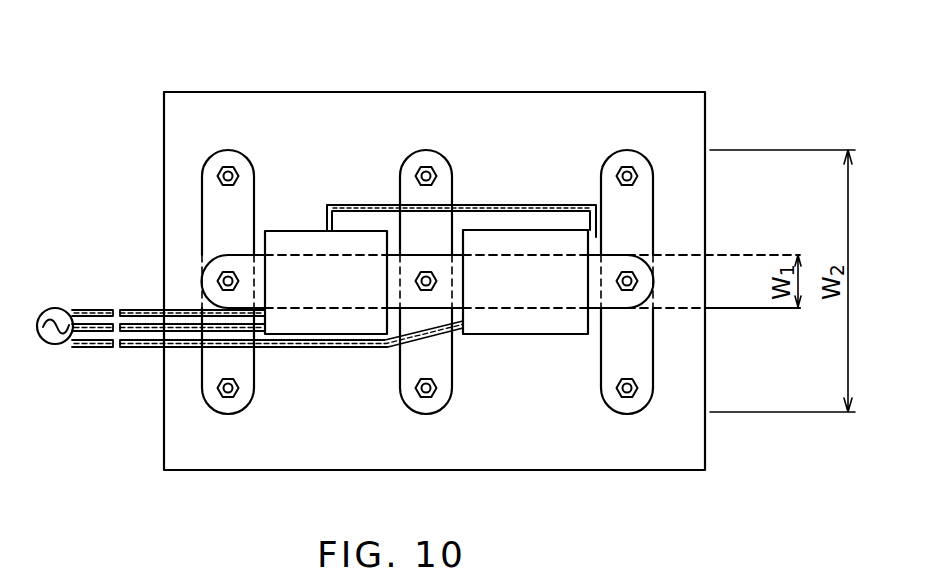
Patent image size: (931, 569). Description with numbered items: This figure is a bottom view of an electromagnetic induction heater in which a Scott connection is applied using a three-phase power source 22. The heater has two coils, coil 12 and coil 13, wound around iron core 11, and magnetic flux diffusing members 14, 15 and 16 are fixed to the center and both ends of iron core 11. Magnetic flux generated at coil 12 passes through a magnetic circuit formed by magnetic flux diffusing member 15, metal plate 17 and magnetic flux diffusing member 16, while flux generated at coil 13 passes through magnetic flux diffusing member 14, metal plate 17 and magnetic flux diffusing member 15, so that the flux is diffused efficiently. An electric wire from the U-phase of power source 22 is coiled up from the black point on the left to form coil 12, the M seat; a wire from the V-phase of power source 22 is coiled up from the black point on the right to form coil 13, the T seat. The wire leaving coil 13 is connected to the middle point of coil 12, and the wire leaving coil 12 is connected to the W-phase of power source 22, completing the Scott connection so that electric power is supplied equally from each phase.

The iron core 11 is at (643, 287).
The coil 12 is at (290, 237).
The coil 13 is at (513, 322).
The magnetic flux diffusing member 14 is at (648, 207).
The magnetic flux diffusing member 15 is at (427, 148).
The magnetic flux diffusing member 16 is at (231, 150).
The metal plate 17 is at (665, 100).
The power source 22 is at (57, 343).